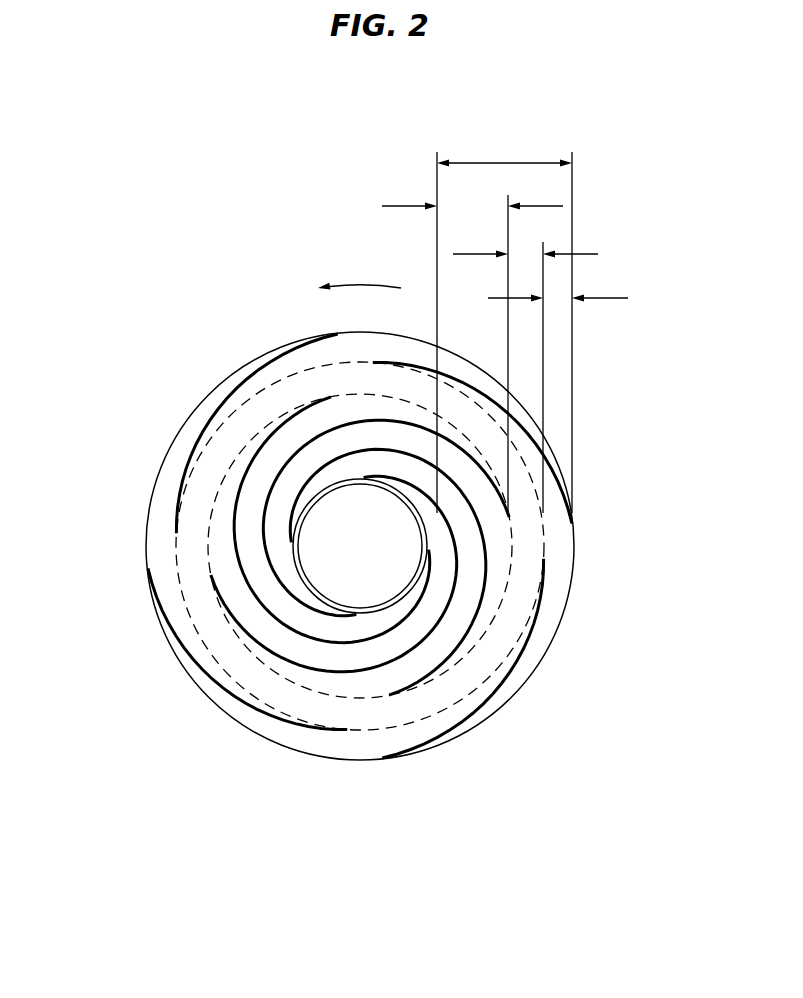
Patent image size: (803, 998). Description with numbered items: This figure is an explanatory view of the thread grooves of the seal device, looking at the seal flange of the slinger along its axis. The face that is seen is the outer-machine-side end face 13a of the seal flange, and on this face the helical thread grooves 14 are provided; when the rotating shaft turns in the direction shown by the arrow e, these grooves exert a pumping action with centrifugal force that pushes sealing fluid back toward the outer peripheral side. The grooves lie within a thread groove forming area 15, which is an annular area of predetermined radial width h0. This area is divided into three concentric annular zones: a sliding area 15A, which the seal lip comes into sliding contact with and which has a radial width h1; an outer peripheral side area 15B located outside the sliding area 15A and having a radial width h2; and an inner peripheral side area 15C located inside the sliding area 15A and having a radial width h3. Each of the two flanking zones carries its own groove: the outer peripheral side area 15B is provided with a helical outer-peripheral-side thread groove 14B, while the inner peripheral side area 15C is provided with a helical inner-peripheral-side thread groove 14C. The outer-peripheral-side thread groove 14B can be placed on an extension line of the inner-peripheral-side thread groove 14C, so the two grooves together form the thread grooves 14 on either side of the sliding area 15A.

The outer-machine-side end face 13a is at (217, 388).
The thread groove forming area 15 is at (165, 493).
The sliding area 15A is at (523, 529).
The outer peripheral side area 15B is at (552, 570).
The inner peripheral side area 15C is at (467, 583).
The thread groove 14 is at (404, 593).
The outer-peripheral-side thread groove 14B is at (404, 566).
The inner-peripheral-side thread groove 14C is at (452, 624).
The radial width of thread groove forming area h0 is at (504, 325).
The radial width of sliding area h1 is at (525, 377).
The radial width of outer peripheral side area h2 is at (558, 298).
The radial width of inner peripheral side area h3 is at (472, 354).
The rotating direction arrow e is at (359, 271).